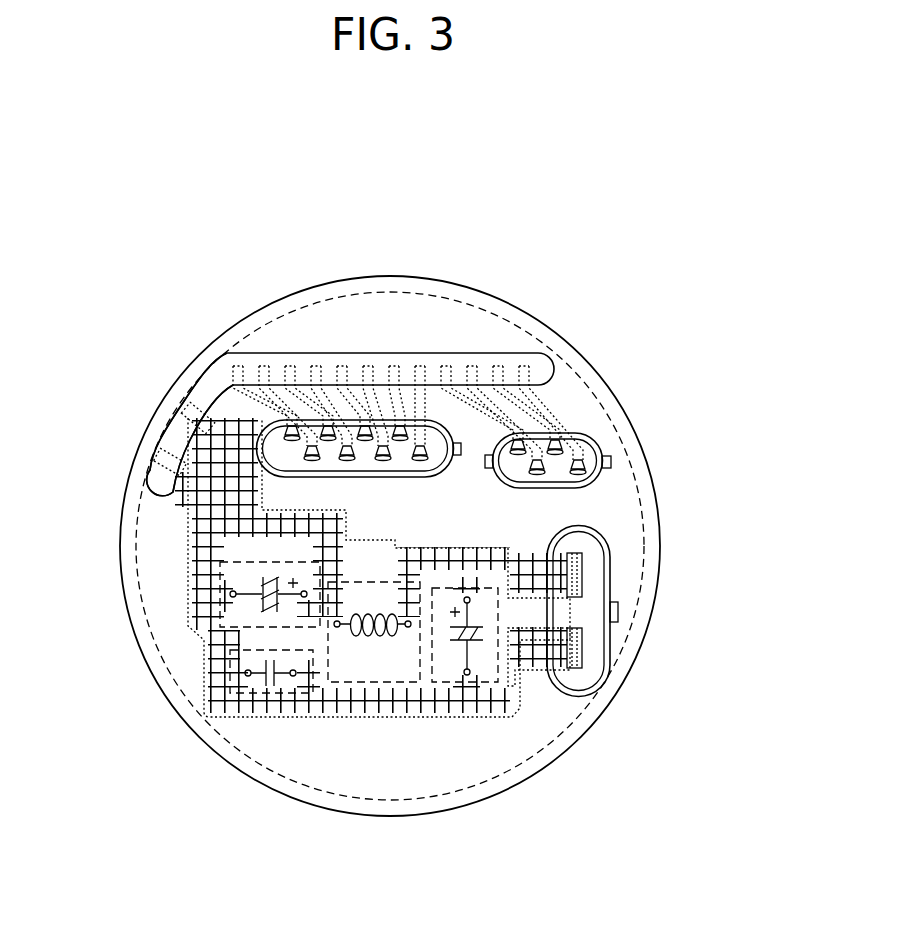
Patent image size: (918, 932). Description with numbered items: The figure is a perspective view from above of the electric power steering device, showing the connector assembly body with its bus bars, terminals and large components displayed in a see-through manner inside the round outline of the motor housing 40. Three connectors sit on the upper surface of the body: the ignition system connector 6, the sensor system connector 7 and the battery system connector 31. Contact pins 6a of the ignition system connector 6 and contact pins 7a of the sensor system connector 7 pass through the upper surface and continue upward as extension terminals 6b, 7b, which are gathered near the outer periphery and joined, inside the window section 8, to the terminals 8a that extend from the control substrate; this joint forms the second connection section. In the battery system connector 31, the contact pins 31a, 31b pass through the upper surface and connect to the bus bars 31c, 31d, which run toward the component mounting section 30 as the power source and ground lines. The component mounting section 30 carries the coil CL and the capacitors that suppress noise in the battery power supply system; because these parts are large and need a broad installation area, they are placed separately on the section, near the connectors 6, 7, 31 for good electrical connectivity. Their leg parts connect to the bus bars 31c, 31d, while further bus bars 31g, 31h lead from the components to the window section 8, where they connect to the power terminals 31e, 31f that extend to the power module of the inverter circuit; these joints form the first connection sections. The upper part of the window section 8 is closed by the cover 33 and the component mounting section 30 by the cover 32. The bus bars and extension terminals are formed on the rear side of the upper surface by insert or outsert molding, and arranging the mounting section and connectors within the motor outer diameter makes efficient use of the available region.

The housing 40 is at (460, 807).
The cover 33 is at (393, 355).
The extension terminal 7b is at (207, 380).
The contact pin 7a is at (230, 350).
The window section 8 is at (367, 362).
The terminal 8a is at (535, 385).
The sensor system connector 7 is at (207, 403).
The ignition system connector 6 is at (604, 458).
The contact pin 6a is at (562, 455).
The extension terminal 6b is at (560, 403).
The power terminal 31e is at (203, 412).
The power terminal 31f is at (253, 412).
The component mounting section 30 is at (233, 637).
The cover 32 is at (210, 705).
The bus bar 31c is at (508, 545).
The battery system connector 31 is at (612, 630).
The contact pin 31a is at (583, 567).
The contact pin 31b is at (583, 667).
The bus bar 31d is at (490, 707).
The bus bar 31g is at (196, 505).
The bus bar 31h is at (238, 492).
The coil CL is at (387, 660).